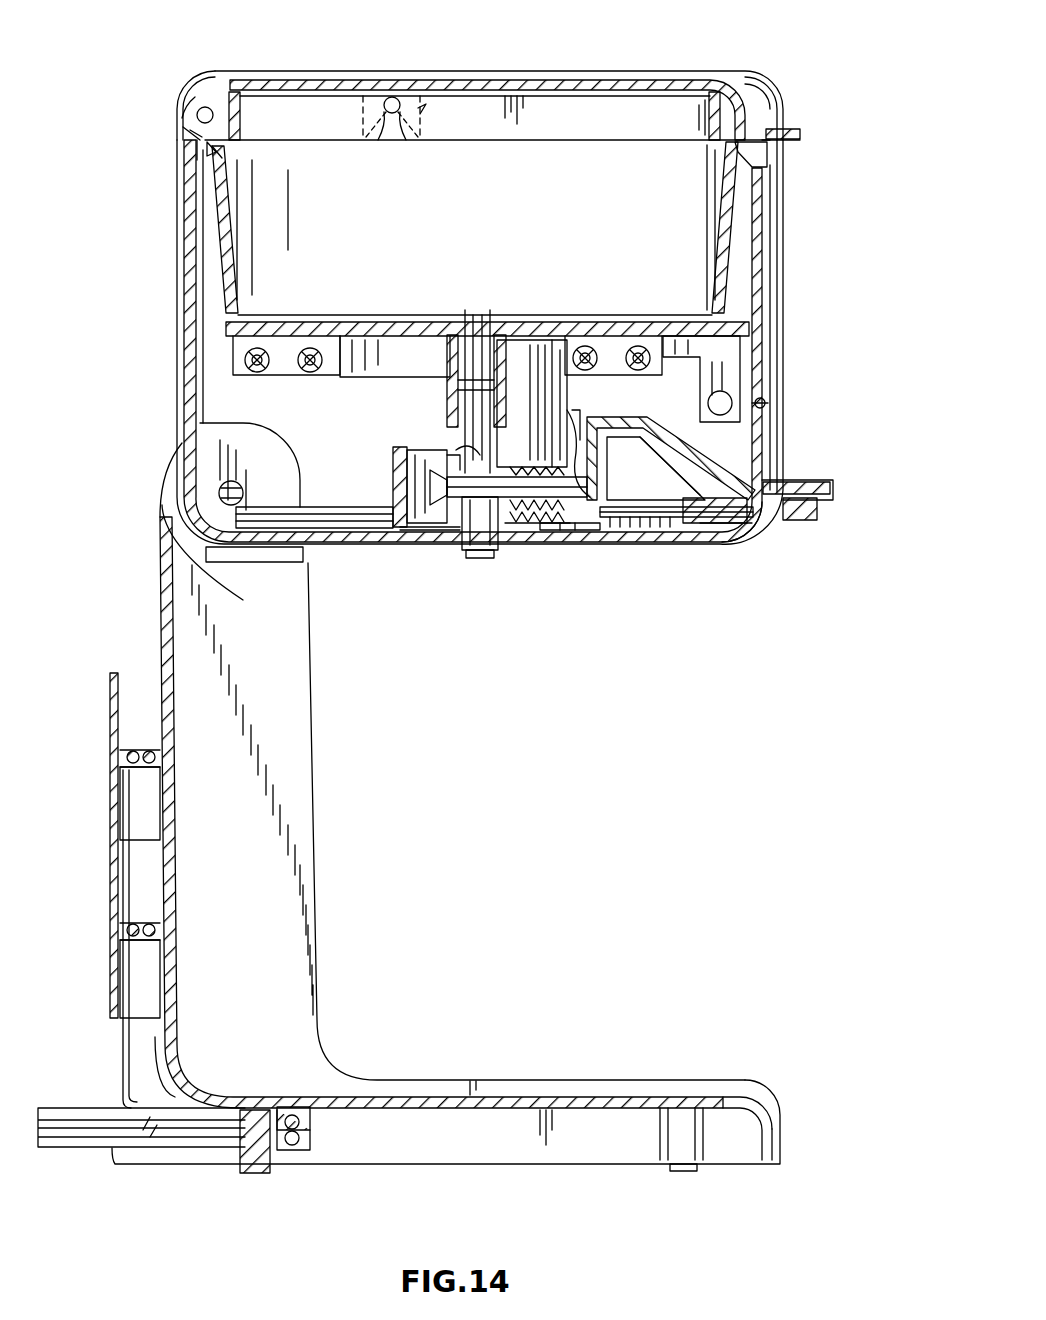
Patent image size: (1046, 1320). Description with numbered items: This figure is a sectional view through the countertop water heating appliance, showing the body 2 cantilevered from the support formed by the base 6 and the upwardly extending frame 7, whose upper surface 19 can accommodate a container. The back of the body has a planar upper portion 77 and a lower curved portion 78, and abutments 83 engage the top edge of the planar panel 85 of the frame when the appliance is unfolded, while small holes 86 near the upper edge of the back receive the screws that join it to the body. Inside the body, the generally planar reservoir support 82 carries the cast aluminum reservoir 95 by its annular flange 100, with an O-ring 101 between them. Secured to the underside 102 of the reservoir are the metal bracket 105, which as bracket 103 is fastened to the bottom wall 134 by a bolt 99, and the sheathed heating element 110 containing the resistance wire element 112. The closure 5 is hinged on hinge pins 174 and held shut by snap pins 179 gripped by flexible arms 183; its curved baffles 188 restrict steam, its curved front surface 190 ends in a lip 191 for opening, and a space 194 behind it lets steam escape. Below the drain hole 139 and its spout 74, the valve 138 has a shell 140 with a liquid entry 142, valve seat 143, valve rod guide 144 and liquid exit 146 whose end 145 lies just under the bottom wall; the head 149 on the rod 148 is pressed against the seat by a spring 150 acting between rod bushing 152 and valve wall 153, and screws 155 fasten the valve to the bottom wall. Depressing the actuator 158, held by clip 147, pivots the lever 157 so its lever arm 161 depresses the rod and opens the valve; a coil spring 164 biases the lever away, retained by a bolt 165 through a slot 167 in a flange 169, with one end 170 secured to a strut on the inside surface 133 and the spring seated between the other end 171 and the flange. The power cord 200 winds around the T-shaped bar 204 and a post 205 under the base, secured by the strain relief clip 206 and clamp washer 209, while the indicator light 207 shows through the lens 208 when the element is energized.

The body 2 is at (790, 207).
The closure 5 is at (615, 70).
The base 6 is at (784, 1120).
The frame 7 is at (318, 887).
The upper surface 19 is at (570, 1080).
The spout 74 is at (471, 322).
The upper portion 77 is at (184, 354).
The lower curved portion 78 is at (219, 577).
The reservoir support 82 is at (195, 153).
The abutments 83 is at (168, 512).
The panel 85 is at (174, 684).
The holes 86 is at (302, 477).
The reservoir 95 is at (221, 355).
The bolt 99 is at (571, 532).
The flange 100 is at (216, 148).
The O-ring 101 is at (215, 152).
The underside 102 is at (388, 336).
The bracket 103 is at (553, 343).
The metal bracket 105 is at (732, 356).
The heating element 110 is at (312, 375).
The resistance wire element 112 is at (258, 375).
The inside surface 133 is at (716, 533).
The bottom wall 134 is at (431, 508).
The valve 138 is at (420, 525).
The drain hole 139 is at (501, 338).
The shell 140 is at (394, 483).
The liquid entry 142 is at (477, 409).
The valve seat 143 is at (456, 455).
The valve rod guide 144 is at (545, 340).
The end 145 is at (470, 498).
The liquid exit 146 is at (481, 553).
The clip 147 is at (820, 508).
The rod 148 is at (455, 522).
The head 149 is at (468, 452).
The spring 150 is at (532, 508).
The rod bushing 152 is at (578, 440).
The valve wall 153 is at (540, 523).
The screws 155 is at (478, 560).
The lever 157 is at (705, 465).
The actuator 158 is at (832, 488).
The lever arm 161 is at (613, 480).
The coil spring 164 is at (562, 532).
The bolt 165 is at (701, 527).
The slot 167 is at (612, 509).
The flange 169 is at (616, 528).
The end 170 is at (742, 532).
The other end 171 is at (526, 533).
The hinge pins 174 is at (198, 106).
The snap pins 179 is at (392, 114).
The flexible arms 183 is at (421, 111).
The baffles 188 is at (240, 124).
The front surface 190 is at (768, 96).
The lip 191 is at (800, 134).
The space 194 is at (190, 128).
The power cord 200 is at (123, 1080).
The T-shaped bar 204 is at (111, 700).
The post 205 is at (276, 1108).
The strain relief clip 206 is at (318, 1132).
The indicator light 207 is at (732, 400).
The lens 208 is at (768, 406).
The clamp washer 209 is at (266, 1174).